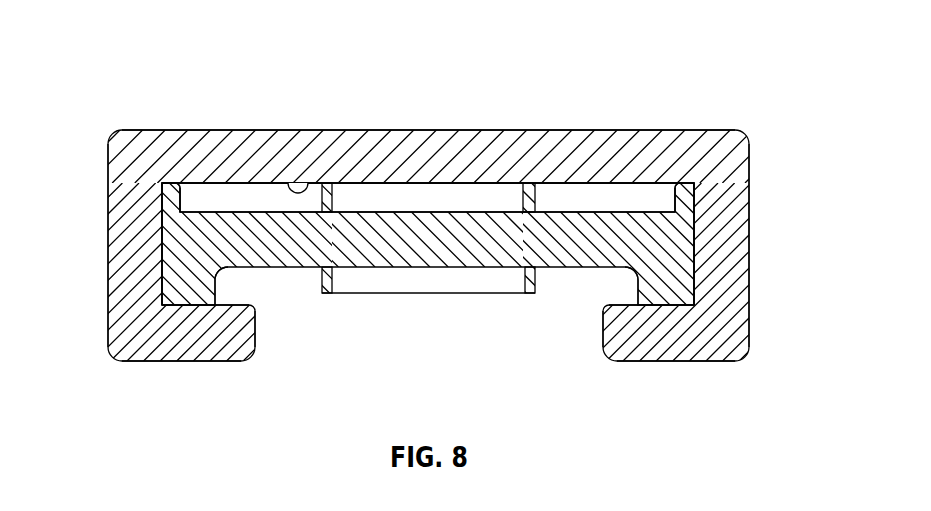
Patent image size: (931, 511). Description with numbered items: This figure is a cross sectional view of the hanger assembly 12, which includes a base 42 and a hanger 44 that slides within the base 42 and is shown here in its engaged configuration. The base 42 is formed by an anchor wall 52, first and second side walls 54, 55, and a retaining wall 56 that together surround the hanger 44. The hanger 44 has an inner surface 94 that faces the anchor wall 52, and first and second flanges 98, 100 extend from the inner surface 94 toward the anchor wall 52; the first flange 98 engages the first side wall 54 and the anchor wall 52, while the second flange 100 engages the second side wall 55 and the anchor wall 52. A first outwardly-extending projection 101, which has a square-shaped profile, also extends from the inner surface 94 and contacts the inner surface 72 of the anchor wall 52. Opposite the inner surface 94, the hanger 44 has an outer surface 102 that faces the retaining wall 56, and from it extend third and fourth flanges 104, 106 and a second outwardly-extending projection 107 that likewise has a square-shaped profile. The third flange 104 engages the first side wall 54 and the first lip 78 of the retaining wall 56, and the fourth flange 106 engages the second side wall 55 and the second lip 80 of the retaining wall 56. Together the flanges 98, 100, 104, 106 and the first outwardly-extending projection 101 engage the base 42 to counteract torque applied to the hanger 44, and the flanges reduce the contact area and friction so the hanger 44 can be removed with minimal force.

The hanger assembly 12 is at (770, 61).
The base 42 is at (645, 150).
The hanger 44 is at (590, 245).
The anchor wall 52 is at (495, 150).
The first side wall 54 is at (118, 228).
The second side wall 55 is at (738, 230).
The retaining wall 56 is at (215, 350).
The inner surface of the anchor wall 72 is at (308, 178).
The first lip 78 is at (165, 343).
The second lip 80 is at (720, 328).
The inner surface 94 is at (250, 210).
The first flange 98 is at (163, 210).
The second flange 100 is at (679, 197).
The first outwardly-extending projection 101 is at (327, 183).
The outer surface 102 is at (297, 268).
The third flange 104 is at (180, 297).
The fourth flange 106 is at (677, 268).
The second outwardly-extending projection 107 is at (322, 293).